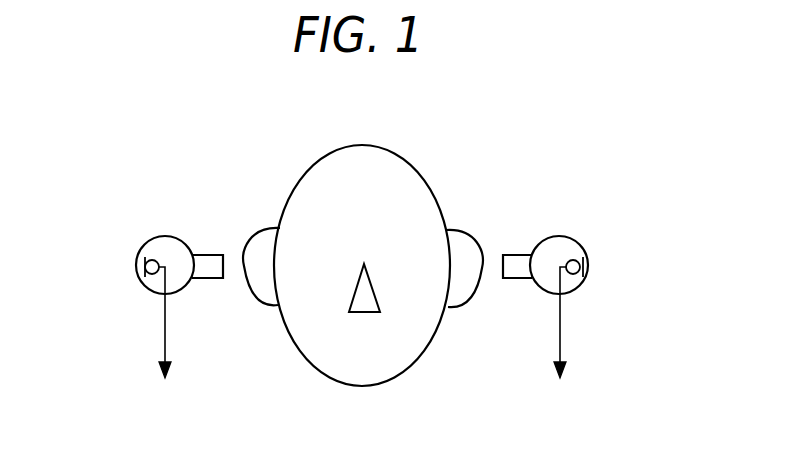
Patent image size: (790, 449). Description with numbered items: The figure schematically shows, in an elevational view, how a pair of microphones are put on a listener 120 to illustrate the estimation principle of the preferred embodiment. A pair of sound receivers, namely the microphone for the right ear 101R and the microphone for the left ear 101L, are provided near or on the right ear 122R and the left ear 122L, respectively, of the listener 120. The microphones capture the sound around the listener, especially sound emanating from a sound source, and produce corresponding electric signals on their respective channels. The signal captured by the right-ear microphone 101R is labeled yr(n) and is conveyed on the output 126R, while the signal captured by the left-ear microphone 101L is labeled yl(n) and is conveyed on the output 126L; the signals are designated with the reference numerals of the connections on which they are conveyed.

The listener 120 is at (413, 162).
The microphone for right ear 101R is at (145, 265).
The microphone for left ear 101L is at (582, 262).
The right ear 122R is at (250, 298).
The left ear 122L is at (477, 301).
The output 126R is at (165, 322).
The output 126L is at (560, 325).